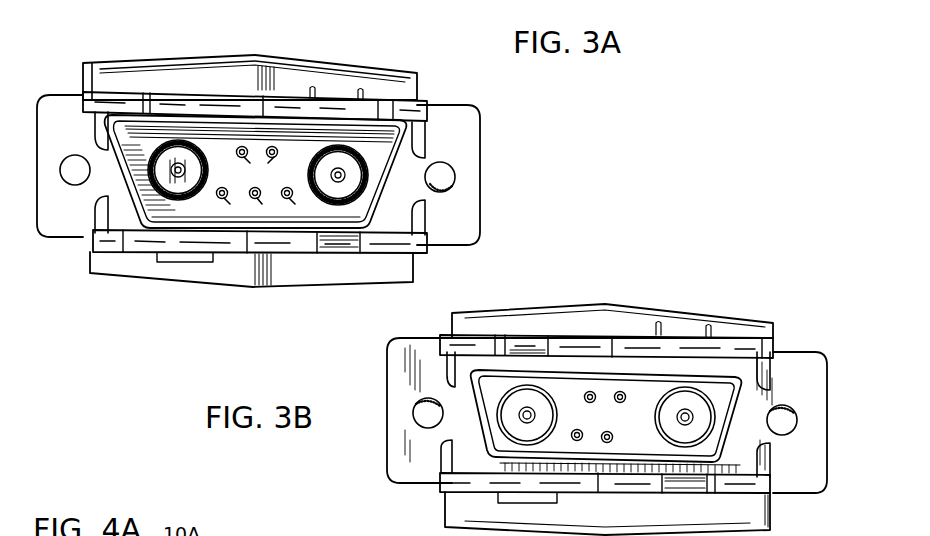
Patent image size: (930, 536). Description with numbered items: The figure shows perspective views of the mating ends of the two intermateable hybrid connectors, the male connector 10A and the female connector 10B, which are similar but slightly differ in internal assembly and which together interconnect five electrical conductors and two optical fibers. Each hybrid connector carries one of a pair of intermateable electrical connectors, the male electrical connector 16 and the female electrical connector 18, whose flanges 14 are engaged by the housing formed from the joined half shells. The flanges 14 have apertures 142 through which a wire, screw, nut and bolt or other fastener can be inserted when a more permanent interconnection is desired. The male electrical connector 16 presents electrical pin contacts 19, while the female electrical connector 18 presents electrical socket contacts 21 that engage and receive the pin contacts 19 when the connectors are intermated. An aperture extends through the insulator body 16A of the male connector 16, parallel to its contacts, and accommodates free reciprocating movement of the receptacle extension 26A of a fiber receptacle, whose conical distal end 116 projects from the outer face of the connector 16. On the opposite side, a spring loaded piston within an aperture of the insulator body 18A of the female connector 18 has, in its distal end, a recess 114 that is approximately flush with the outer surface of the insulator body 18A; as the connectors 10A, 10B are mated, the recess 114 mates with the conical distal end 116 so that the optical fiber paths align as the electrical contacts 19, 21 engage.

In FIG. 3A, the male connector 10A is at (274, 144).
In FIG. 3B, the female connector 10B is at (724, 300).
In FIG. 3A, the flange 14 is at (450, 233).
In FIG. 3B, the flange 14 is at (400, 359).
In FIG. 3A, the aperture 142 is at (457, 177).
In FIG. 3B, the aperture 142 is at (418, 413).
In FIG. 3A, the male electrical connector 16 is at (383, 118).
In FIG. 3A, the insulator body 16A is at (387, 148).
In FIG. 3B, the female electrical connector 18 is at (782, 387).
In FIG. 3B, the insulator body 18A is at (727, 387).
In FIG. 3A, the pin contacts 19 is at (243, 160).
In FIG. 3B, the socket contacts 21 is at (589, 403).
In FIG. 3A, the receptacle extension 26A is at (150, 152).
In FIG. 3B, the recess 114 is at (513, 433).
In FIG. 3A, the conical distal end 116 is at (170, 187).